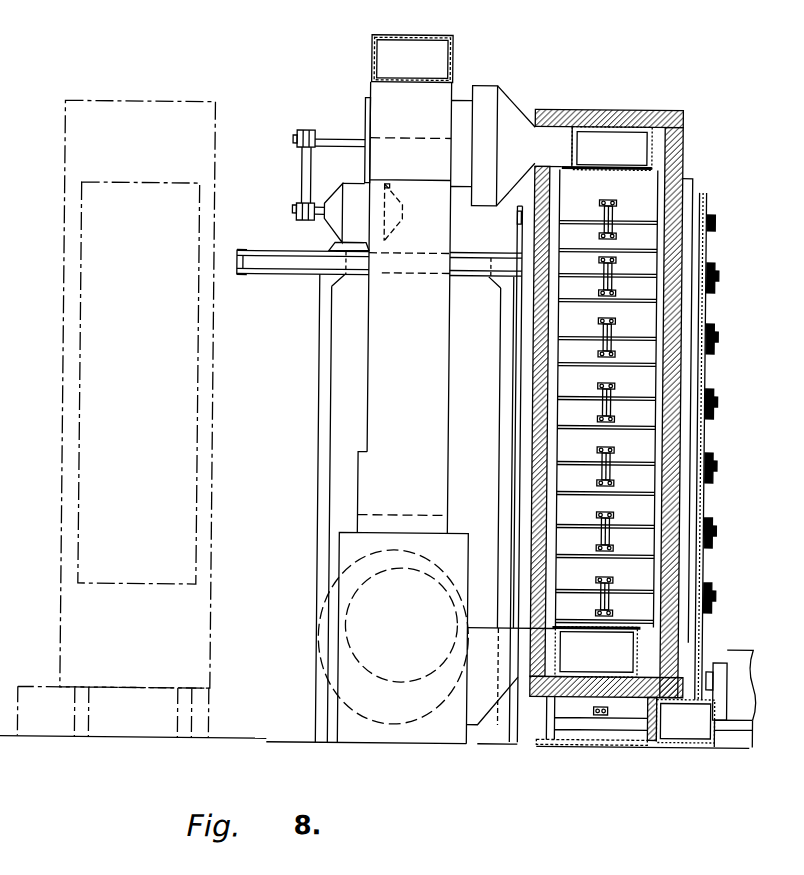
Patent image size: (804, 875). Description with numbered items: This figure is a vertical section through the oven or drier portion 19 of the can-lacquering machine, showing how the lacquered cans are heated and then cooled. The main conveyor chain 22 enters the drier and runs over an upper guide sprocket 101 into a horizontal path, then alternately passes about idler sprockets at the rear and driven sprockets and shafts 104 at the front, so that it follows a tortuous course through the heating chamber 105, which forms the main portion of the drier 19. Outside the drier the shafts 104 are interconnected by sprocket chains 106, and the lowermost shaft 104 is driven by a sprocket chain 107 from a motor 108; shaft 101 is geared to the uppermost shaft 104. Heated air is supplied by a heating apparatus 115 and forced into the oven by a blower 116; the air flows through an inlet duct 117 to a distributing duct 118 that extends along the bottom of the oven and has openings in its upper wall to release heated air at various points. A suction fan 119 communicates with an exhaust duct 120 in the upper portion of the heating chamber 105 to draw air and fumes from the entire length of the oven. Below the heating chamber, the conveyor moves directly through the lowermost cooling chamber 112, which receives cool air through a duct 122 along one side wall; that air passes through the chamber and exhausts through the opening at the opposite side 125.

The oven or drier portion 19 is at (218, 134).
The main conveyor chain 22 is at (604, 195).
The upper guide sprocket 101 is at (632, 215).
The driven sprockets and shafts 104 is at (637, 265).
The heating chamber 105 is at (575, 322).
The sprocket chains 106 is at (717, 309).
The sprocket chain 107 is at (705, 639).
The motor 108 is at (755, 640).
The cooling chamber 112 is at (582, 706).
The heating apparatus 115 is at (363, 633).
The blower 116 is at (352, 690).
The inlet duct 117 is at (487, 634).
The distributing duct 118 is at (588, 642).
The suction fan 119 is at (365, 119).
The exhaust duct 120 is at (633, 138).
The duct 122 is at (707, 728).
The opposite side of cooling chamber 125 is at (550, 701).